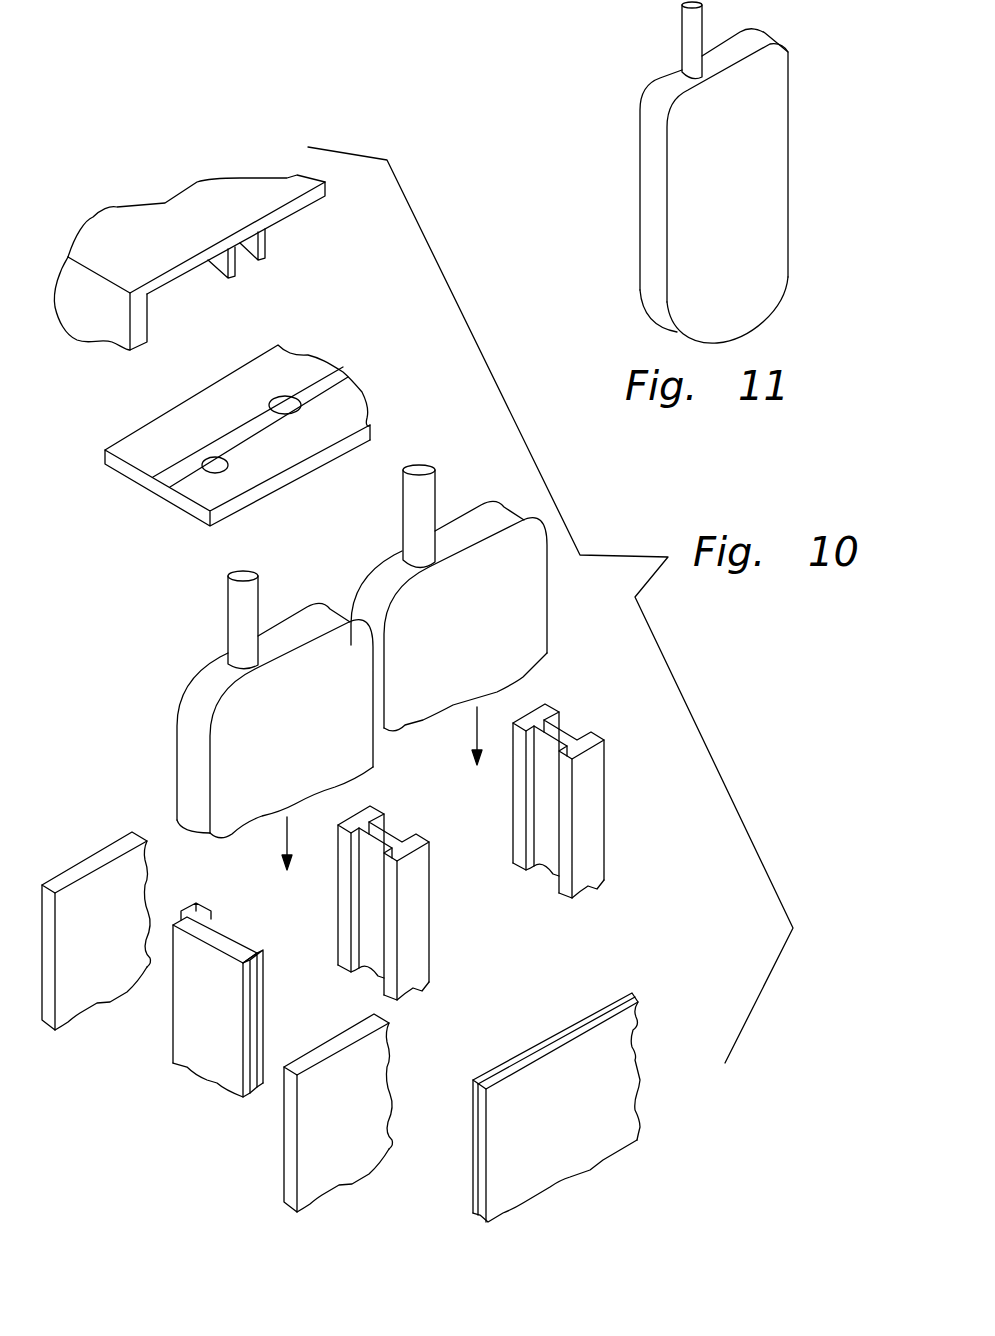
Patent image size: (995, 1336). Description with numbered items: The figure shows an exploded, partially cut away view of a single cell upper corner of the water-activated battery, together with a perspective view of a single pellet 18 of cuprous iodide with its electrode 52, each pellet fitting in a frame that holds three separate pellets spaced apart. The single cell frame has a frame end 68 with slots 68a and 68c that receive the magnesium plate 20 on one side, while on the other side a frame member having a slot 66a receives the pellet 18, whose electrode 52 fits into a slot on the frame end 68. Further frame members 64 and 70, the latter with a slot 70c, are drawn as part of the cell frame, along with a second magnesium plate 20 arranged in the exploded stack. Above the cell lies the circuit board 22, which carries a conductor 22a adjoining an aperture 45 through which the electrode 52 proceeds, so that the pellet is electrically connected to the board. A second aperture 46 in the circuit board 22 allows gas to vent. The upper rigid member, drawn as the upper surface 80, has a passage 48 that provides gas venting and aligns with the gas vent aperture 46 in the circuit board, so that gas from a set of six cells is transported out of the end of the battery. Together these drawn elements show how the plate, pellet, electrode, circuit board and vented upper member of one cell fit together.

In FIG. 10, the pellet 18 is at (333, 760).
In FIG. 11, the pellet 18 is at (743, 230).
In FIG. 10, the magnesium plate 20 is at (93, 850).
In FIG. 10, the circuit board 22 is at (230, 419).
In FIG. 10, the conductor 22a is at (185, 456).
In FIG. 10, the aperture 45 is at (282, 397).
In FIG. 10, the aperture 46 is at (207, 472).
In FIG. 10, the passage 48 is at (266, 252).
In FIG. 10, the electrode 52 is at (252, 568).
In FIG. 11, the electrode 52 is at (682, 48).
In FIG. 10, the frame member 64 is at (608, 778).
In FIG. 10, the slot 66a is at (373, 842).
In FIG. 10, the frame end 68 is at (204, 974).
In FIG. 10, the slot 68a is at (250, 953).
In FIG. 10, the slot 68c is at (195, 915).
In FIG. 10, the frame member 70 is at (600, 1075).
In FIG. 10, the slot 70c is at (543, 1038).
In FIG. 10, the upper surface 80 is at (127, 245).